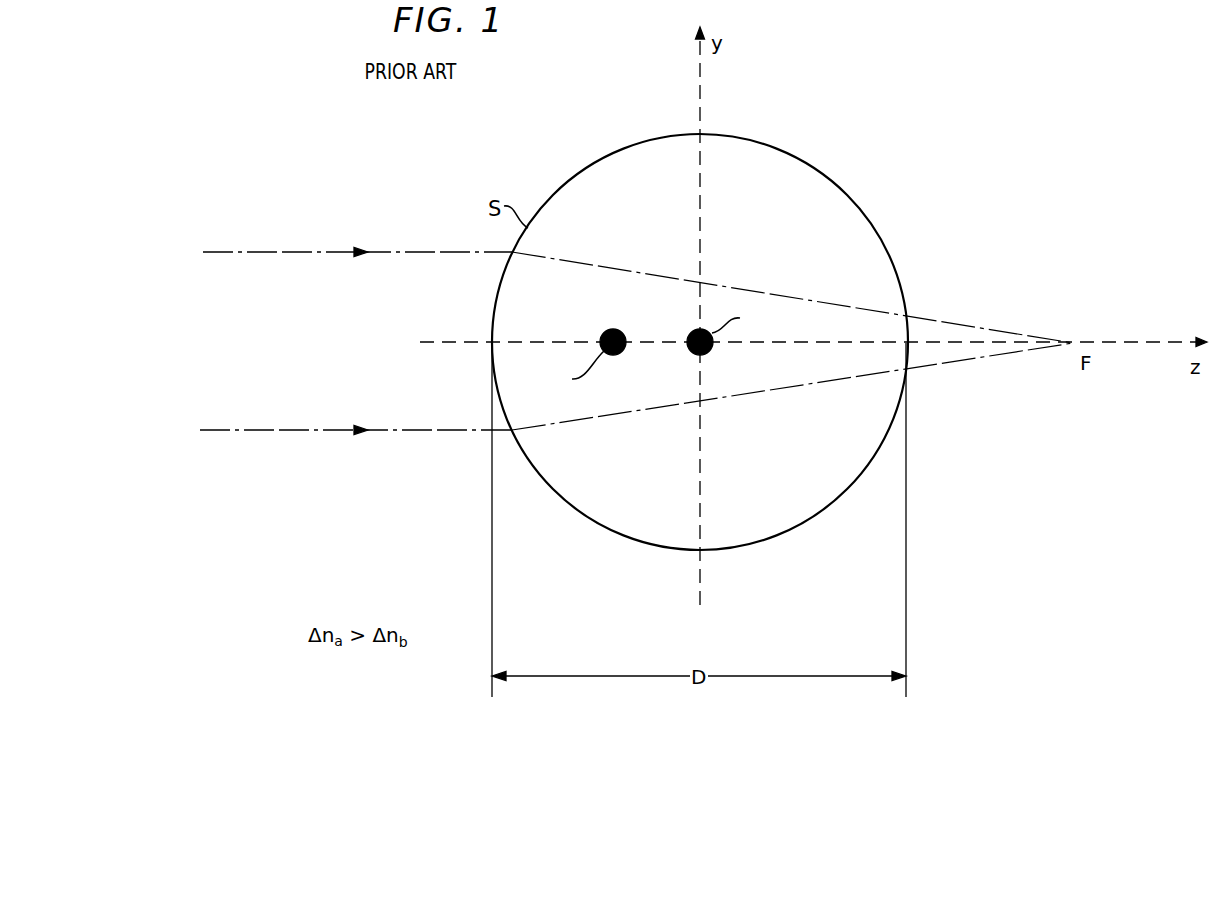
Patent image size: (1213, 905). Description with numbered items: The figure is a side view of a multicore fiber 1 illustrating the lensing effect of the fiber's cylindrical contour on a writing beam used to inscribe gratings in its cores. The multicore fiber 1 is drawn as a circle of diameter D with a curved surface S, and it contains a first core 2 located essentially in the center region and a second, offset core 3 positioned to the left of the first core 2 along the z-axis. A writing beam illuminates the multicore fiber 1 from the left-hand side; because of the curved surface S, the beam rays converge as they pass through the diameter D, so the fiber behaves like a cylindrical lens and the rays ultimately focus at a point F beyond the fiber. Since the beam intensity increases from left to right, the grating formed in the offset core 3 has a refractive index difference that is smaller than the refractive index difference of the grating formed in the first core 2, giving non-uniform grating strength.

The multicore fiber 1 is at (894, 156).
The first core 2 is at (711, 350).
The offset core 3 is at (604, 333).